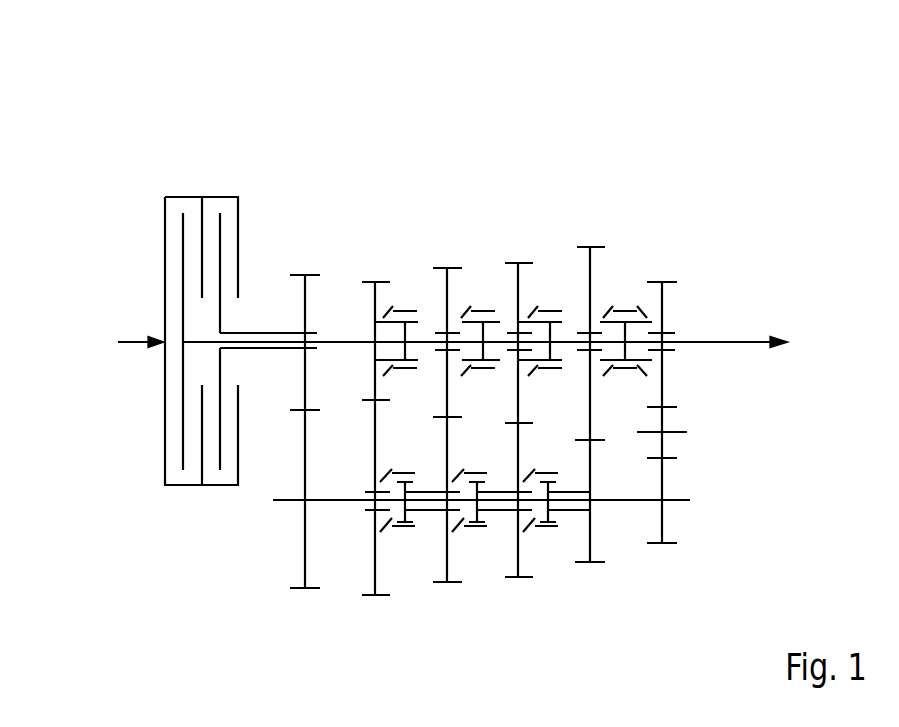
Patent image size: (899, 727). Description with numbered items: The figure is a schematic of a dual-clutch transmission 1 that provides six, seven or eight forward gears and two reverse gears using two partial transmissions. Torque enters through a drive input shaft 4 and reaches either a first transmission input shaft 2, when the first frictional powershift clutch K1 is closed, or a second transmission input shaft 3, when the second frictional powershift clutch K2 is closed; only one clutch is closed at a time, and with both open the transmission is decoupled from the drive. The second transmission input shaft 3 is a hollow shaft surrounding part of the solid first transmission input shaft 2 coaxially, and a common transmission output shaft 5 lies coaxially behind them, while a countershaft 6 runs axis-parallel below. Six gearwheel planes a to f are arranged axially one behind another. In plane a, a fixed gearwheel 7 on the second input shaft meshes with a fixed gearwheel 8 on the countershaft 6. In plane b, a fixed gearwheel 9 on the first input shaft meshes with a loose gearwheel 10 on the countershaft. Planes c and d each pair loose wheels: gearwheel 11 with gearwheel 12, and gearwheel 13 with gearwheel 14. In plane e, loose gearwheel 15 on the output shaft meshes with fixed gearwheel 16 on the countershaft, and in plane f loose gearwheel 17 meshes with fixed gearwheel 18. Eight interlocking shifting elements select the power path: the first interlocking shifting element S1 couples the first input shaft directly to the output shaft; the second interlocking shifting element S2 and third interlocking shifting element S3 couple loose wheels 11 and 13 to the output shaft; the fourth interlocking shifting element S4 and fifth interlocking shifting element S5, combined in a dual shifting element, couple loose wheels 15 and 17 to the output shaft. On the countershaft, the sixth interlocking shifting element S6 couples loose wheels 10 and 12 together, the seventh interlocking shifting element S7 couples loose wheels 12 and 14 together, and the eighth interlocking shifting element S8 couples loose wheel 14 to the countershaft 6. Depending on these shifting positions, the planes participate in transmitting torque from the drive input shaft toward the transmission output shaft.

The dual-clutch transmission 1 is at (758, 145).
The first transmission input shaft 2 is at (217, 343).
The second transmission input shaft 3 is at (233, 332).
The drive input shaft 4 is at (125, 350).
The transmission output shaft 5 is at (757, 338).
The countershaft 6 is at (337, 503).
The gearwheel 7 is at (292, 283).
The gearwheel 8 is at (305, 530).
The gearwheel 9 is at (360, 286).
The gearwheel 10 is at (377, 572).
The gearwheel 11 is at (443, 283).
The gearwheel 12 is at (450, 565).
The gearwheel 13 is at (512, 283).
The gearwheel 14 is at (520, 565).
The gearwheel 15 is at (589, 275).
The gearwheel 16 is at (592, 545).
The gearwheel 17 is at (668, 292).
The gearwheel 18 is at (665, 530).
The first frictional powershift clutch K1 is at (184, 490).
The second frictional powershift clutch K2 is at (220, 490).
The first interlocking shifting element S1 is at (396, 330).
The second interlocking shifting element S2 is at (480, 330).
The third interlocking shifting element S3 is at (540, 330).
The fourth interlocking shifting element S4 is at (625, 329).
The fifth interlocking shifting element S5 is at (647, 330).
The sixth interlocking shifting element S6 is at (413, 487).
The seventh interlocking shifting element S7 is at (485, 487).
The eighth interlocking shifting element S8 is at (556, 487).